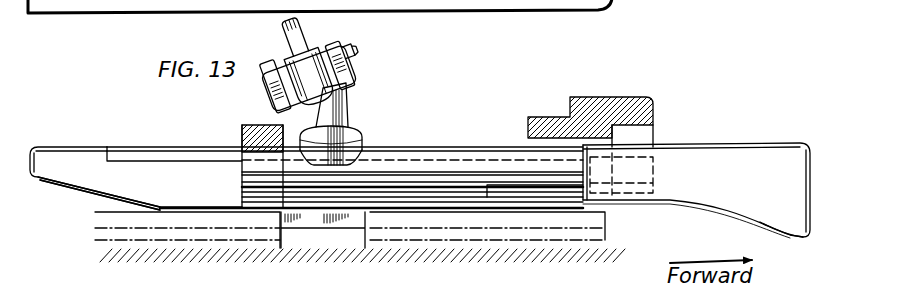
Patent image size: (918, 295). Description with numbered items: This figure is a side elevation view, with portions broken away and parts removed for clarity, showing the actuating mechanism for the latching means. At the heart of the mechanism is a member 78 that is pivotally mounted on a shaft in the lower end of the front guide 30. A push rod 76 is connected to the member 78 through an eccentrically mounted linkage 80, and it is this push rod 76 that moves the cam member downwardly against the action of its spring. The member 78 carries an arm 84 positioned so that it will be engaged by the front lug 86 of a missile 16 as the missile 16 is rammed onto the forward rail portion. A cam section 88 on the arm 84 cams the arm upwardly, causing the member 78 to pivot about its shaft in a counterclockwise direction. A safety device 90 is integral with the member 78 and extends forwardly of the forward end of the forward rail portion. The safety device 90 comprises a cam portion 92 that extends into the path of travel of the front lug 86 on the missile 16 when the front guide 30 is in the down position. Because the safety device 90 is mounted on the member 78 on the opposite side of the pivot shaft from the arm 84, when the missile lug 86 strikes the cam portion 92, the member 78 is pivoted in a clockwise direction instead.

The missile 16 is at (618, 247).
The front guide 30 is at (638, 93).
The push rod 76 is at (302, 25).
The member 78 is at (455, 122).
The eccentrically mounted linkage 80 is at (350, 99).
The arm 84 is at (95, 150).
The front lug 86 is at (348, 218).
The cam section 88 is at (82, 190).
The safety device 90 is at (733, 143).
The cam portion 92 is at (791, 236).